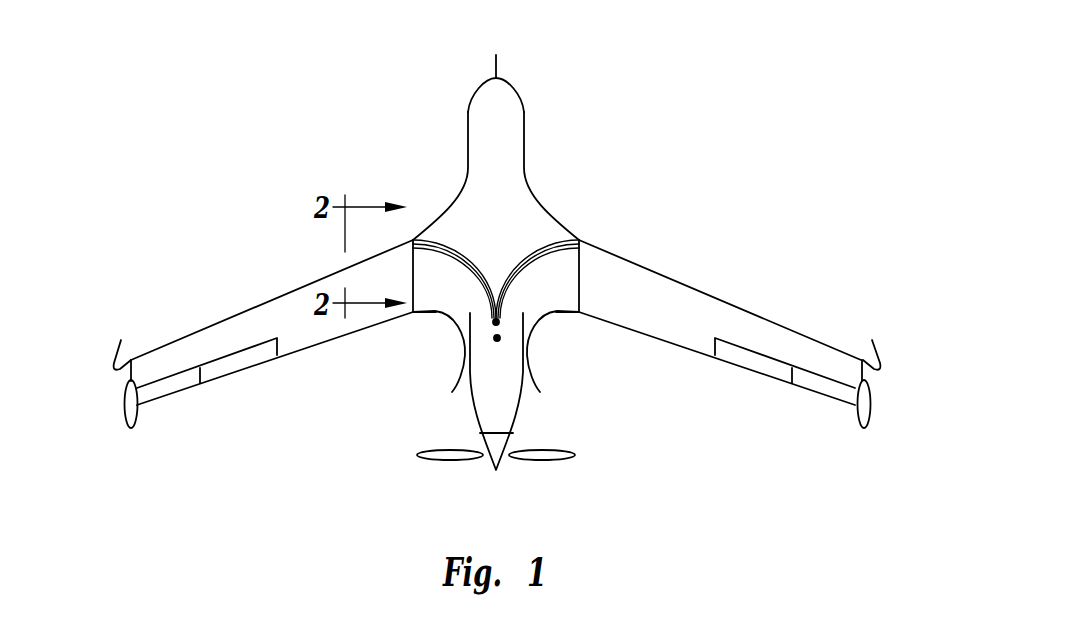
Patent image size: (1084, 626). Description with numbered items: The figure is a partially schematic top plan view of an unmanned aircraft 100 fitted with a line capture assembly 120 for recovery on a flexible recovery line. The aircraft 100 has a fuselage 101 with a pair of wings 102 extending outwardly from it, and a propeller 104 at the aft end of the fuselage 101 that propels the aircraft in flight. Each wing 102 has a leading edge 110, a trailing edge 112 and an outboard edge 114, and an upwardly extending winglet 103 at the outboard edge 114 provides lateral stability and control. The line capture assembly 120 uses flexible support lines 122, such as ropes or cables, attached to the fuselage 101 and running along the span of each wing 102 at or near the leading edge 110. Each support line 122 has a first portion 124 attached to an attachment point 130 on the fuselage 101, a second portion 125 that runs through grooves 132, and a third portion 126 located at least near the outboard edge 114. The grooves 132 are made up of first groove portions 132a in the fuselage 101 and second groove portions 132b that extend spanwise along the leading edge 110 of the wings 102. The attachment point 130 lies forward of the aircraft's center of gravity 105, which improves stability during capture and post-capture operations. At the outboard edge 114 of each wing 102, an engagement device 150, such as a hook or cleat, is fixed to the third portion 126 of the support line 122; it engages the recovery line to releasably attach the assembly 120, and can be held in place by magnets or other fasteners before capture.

The unmanned aircraft 100 is at (699, 55).
The fuselage 101 is at (522, 100).
The wings 102 is at (307, 325).
The winglet 103 is at (127, 429).
The propeller 104 is at (428, 460).
The center of gravity 105 is at (497, 342).
The leading edge 110 is at (258, 302).
The trailing edge 112 is at (298, 352).
The outboard edge 114 is at (124, 384).
The line capture assembly 120 is at (468, 240).
The support line 122 is at (490, 222).
The first portion 124 is at (485, 330).
The second portion 125 is at (214, 308).
The third portion 126 is at (137, 343).
The attachment point 130 is at (524, 362).
The grooves 132 is at (430, 252).
The first groove portions 132a is at (448, 240).
The second groove portions 132b is at (302, 283).
The engagement device 150 is at (117, 352).